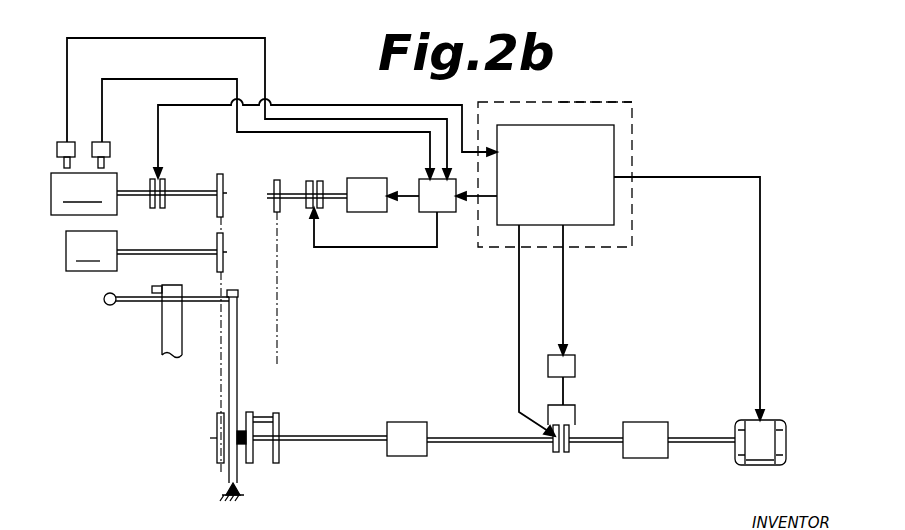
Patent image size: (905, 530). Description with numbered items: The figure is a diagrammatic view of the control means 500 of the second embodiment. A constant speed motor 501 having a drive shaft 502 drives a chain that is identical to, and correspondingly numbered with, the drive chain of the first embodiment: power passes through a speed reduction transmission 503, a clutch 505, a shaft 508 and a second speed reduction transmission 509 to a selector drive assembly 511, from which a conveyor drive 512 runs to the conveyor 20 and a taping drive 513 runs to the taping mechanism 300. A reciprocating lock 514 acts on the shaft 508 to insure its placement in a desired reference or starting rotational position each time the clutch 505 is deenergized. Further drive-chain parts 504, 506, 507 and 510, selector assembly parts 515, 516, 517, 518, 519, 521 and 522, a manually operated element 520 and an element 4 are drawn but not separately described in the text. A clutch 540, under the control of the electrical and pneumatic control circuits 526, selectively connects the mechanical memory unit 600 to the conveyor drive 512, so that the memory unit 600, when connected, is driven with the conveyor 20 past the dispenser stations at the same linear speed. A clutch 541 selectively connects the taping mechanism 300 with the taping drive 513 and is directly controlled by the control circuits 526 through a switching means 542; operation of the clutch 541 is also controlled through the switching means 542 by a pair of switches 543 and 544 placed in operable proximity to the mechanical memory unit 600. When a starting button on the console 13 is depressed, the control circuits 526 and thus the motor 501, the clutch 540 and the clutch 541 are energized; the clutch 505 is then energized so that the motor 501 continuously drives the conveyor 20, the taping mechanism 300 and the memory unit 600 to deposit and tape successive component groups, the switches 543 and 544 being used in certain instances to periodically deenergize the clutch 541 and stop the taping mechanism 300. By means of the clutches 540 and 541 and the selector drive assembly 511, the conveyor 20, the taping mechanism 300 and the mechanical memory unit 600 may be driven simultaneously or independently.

The switch 543 is at (62, 142).
The switch 544 is at (140, 134).
The mechanical memory unit 600 is at (84, 194).
The clutch 540 is at (207, 165).
The conveyor 20 is at (91, 251).
The conveyor drive 512 is at (218, 282).
The clutch 541 is at (322, 185).
The taping drive 513 is at (280, 272).
The taping mechanism 300 is at (393, 166).
The switching means 542 is at (435, 213).
The control circuits 526 is at (572, 132).
The control means 500 is at (642, 122).
The console 13 is at (594, 98).
The handle 520 is at (104, 299).
The frame 4 is at (162, 325).
The lever 515 is at (250, 463).
The pivot 521 is at (236, 492).
The pulley 518 is at (217, 450).
The selector drive assembly 511 is at (208, 476).
The hub 522 is at (240, 437).
The clutch plate 516 is at (248, 415).
The clutch coupling 517 is at (265, 417).
The clutch plate 519 is at (280, 420).
The shaft 510 is at (310, 440).
The speed reduction transmission 509 is at (407, 400).
The shaft 508 is at (486, 417).
The reciprocating lock 514 is at (580, 360).
The clutch 505 is at (556, 465).
The clutch plate 507 is at (553, 445).
The clutch plate 506 is at (570, 452).
The shaft 504 is at (605, 437).
The speed reduction transmission 503 is at (650, 456).
The drive shaft 502 is at (710, 437).
The constant speed motor 501 is at (758, 455).